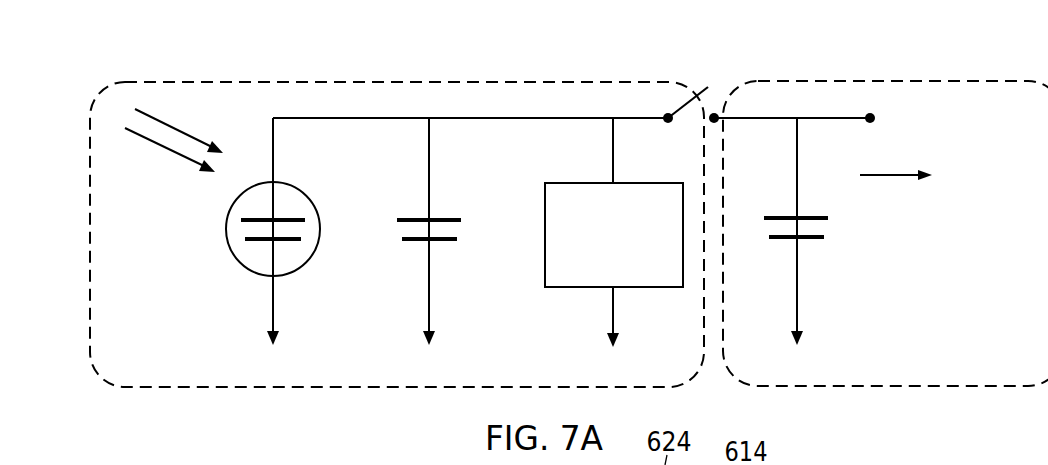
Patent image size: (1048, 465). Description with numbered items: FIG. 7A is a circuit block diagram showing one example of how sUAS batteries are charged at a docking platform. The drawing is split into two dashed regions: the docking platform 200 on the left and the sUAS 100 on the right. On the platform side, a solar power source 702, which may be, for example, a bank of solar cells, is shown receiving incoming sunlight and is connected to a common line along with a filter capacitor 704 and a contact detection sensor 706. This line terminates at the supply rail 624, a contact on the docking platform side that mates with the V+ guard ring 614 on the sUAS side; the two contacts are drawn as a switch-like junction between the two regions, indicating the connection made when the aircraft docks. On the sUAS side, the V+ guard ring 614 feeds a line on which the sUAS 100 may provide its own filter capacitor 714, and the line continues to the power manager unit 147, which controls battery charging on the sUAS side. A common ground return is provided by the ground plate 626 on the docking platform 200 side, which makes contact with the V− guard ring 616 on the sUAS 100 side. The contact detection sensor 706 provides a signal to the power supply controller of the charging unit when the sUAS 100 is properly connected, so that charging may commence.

The sUAS 100 is at (922, 375).
The power manager unit 147 is at (945, 297).
The docking platform 200 is at (280, 378).
The V+ guard ring 614 is at (717, 112).
The V− guard ring 616 is at (797, 363).
The supply rail 624 is at (667, 112).
The ground plate 626 is at (612, 333).
The solar power source 702 is at (302, 190).
The filter capacitor 704 is at (458, 217).
The contact detection sensor 706 is at (565, 181).
The filter capacitor 714 is at (826, 217).